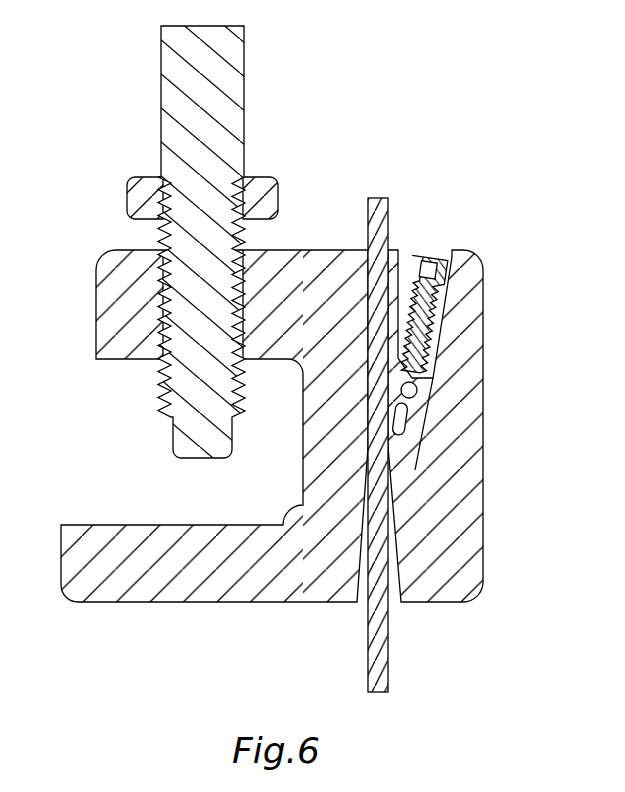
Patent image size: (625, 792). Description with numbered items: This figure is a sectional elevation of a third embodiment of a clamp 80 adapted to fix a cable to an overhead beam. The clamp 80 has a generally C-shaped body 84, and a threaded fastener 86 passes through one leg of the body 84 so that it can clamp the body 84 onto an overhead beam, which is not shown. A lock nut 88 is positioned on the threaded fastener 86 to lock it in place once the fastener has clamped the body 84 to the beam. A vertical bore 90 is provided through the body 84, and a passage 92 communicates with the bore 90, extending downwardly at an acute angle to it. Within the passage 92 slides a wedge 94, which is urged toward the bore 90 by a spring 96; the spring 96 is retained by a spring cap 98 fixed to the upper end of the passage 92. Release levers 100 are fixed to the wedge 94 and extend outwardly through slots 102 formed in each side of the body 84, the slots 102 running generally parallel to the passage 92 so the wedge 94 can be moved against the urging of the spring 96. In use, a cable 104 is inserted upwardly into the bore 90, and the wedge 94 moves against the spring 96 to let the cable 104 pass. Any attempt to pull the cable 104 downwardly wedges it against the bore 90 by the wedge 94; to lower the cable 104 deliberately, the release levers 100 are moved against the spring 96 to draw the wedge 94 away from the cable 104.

The clamp 80 is at (98, 232).
The body 84 is at (458, 515).
The threaded fastener 86 is at (243, 233).
The lock nut 88 is at (267, 195).
The vertical bore 90 is at (362, 590).
The passage 92 is at (442, 303).
The wedge 94 is at (417, 405).
The spring 96 is at (400, 260).
The spring cap 98 is at (443, 263).
The release levers 100 is at (418, 390).
The slots 102 is at (402, 430).
The cable 104 is at (378, 655).